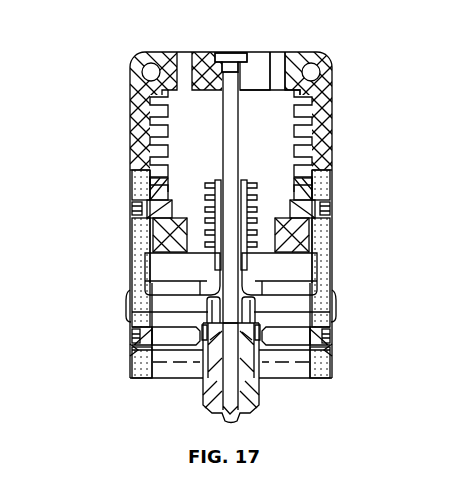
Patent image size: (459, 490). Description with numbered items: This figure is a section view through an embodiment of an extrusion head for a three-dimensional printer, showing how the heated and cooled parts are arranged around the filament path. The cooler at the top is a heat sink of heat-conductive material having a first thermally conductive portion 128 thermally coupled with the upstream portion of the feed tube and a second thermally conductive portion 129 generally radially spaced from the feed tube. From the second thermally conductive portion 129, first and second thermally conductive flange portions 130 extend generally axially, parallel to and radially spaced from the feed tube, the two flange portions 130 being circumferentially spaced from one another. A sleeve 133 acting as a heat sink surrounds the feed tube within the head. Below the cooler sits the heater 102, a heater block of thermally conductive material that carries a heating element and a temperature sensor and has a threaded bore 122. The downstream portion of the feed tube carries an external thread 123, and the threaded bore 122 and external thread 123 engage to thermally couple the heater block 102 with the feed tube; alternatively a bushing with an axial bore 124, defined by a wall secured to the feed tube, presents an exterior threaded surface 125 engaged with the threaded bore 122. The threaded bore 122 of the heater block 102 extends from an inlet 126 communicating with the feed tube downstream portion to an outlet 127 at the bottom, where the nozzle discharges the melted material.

The heater 102 is at (117, 380).
The threaded bore 122 is at (220, 295).
The external thread 123 is at (208, 310).
The axial bore 124 is at (233, 290).
The exterior threaded surface 125 is at (258, 312).
The inlet 126 is at (326, 350).
The outlet 127 is at (207, 380).
The first thermally conductive portion 128 is at (208, 62).
The second thermally conductive portion 129 is at (255, 53).
The thermally conductive flange portion 130 is at (140, 125).
The sleeve 133 is at (246, 182).